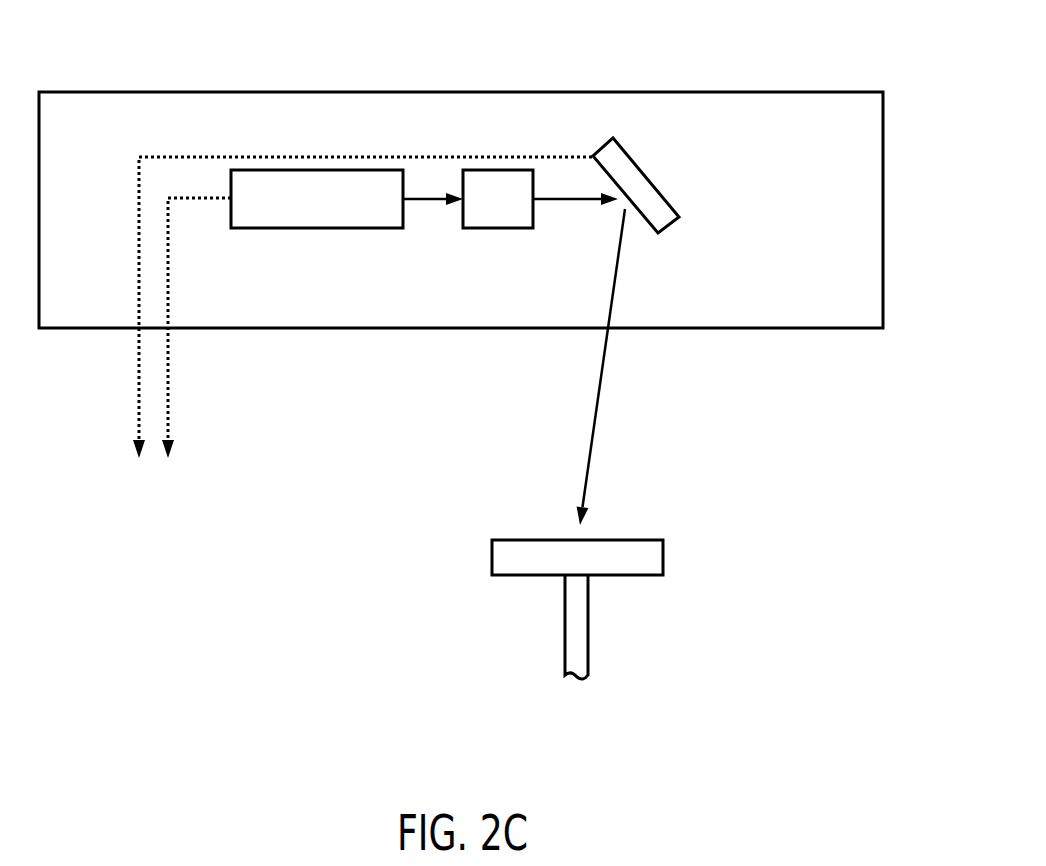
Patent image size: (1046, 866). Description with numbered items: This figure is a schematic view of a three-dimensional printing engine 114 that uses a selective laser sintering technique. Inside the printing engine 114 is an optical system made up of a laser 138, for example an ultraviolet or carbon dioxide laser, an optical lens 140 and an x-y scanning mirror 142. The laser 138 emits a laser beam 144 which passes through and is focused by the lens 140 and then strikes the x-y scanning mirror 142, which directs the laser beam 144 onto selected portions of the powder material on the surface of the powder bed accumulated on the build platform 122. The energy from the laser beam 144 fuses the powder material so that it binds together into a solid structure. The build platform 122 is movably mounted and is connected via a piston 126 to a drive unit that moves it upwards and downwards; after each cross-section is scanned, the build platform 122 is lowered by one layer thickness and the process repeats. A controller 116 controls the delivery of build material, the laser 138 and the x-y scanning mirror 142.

The 3D printing engine 114 is at (460, 92).
The controller 116 is at (193, 462).
The build platform 122 is at (663, 552).
The piston 126 is at (588, 622).
The laser 138 is at (342, 214).
The optical lens 140 is at (520, 214).
The x-y scanning mirror 142 is at (648, 173).
The laser beam 144 is at (600, 398).